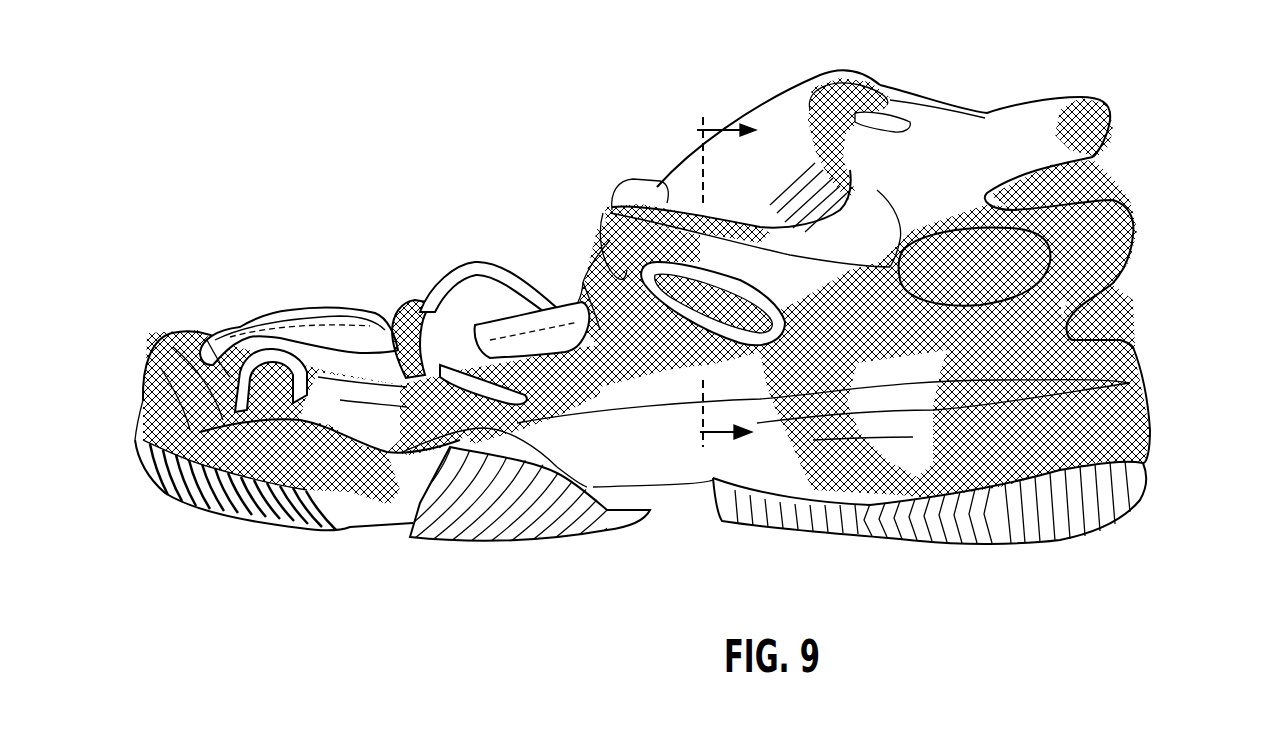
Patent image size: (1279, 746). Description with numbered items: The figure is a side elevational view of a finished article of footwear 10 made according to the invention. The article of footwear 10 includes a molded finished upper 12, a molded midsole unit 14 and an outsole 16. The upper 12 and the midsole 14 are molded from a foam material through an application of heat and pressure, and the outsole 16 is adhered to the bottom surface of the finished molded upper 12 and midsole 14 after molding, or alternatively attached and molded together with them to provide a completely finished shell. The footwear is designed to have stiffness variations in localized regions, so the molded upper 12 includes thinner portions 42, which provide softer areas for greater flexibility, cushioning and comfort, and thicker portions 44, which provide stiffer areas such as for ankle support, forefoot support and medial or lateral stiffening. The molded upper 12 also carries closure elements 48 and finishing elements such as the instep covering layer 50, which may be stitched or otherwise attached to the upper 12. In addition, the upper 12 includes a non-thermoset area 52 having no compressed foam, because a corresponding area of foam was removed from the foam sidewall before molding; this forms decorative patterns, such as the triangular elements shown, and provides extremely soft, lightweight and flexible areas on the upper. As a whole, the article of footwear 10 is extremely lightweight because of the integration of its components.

The article of footwear 10 is at (1200, 95).
The molded finished upper 12 is at (944, 128).
The molded midsole unit 14 is at (377, 523).
The outsole 16 is at (550, 540).
The thinner portions 42 is at (1137, 318).
The thicker portions 44 is at (1128, 222).
The closure elements 48 is at (233, 340).
The instep covering layer 50 is at (357, 320).
The non-thermoset area 52 is at (737, 300).